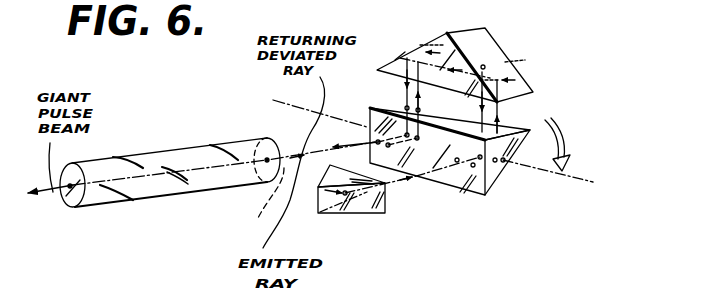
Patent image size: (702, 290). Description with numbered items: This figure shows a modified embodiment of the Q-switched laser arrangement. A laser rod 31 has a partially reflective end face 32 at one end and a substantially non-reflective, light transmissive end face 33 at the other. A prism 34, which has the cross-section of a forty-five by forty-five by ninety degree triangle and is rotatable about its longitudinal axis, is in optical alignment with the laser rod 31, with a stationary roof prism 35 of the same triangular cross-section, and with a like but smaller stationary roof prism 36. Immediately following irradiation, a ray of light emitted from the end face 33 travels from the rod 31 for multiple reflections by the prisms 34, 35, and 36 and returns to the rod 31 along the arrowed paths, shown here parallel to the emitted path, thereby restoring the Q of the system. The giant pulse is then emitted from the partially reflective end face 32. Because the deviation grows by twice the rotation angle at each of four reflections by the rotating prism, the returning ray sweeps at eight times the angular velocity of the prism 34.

The laser rod 31 is at (145, 147).
The partially reflective end face 32 is at (73, 200).
The light transmissive end face 33 is at (256, 204).
The prism 34 is at (505, 184).
The roof prism 35 is at (516, 54).
The roof prism 36 is at (357, 221).